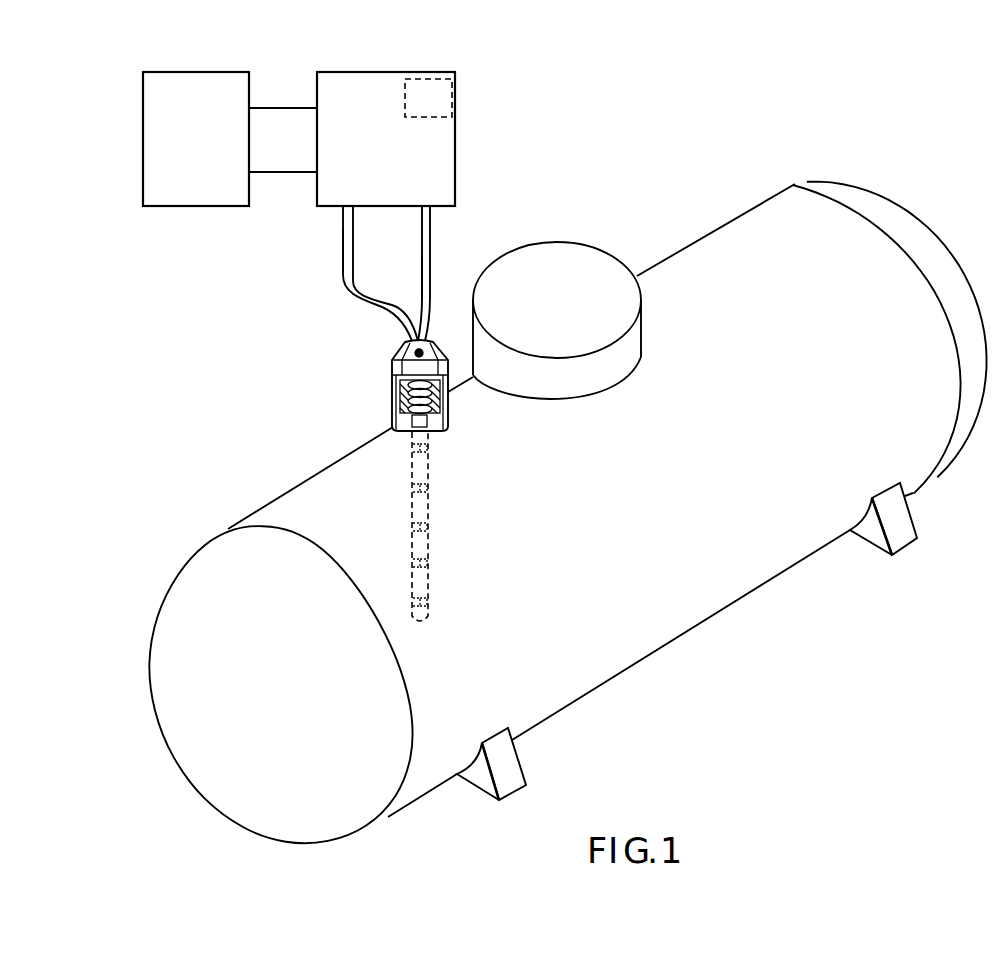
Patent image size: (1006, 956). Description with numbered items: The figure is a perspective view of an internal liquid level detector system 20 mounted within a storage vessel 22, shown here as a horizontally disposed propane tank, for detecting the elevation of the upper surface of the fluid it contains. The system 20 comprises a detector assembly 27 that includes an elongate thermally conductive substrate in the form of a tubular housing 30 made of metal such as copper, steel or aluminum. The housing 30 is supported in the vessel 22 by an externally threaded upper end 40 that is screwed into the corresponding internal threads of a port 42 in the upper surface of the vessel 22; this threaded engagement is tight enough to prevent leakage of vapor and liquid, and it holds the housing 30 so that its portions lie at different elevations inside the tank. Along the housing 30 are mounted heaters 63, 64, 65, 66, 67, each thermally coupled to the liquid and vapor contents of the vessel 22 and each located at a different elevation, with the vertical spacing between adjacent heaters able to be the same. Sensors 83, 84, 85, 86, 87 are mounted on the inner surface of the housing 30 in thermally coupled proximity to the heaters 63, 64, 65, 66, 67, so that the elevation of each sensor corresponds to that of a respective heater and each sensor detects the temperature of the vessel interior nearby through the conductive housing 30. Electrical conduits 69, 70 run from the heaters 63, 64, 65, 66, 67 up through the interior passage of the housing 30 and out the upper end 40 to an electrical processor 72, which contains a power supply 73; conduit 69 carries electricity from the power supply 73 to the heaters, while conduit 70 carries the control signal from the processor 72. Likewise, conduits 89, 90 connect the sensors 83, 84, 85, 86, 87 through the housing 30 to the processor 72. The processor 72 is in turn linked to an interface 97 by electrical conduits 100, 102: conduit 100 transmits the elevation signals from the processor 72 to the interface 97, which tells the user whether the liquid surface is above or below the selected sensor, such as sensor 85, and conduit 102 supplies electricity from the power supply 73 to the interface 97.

The internal liquid level detector system 20 is at (322, 341).
The storage vessel 22 is at (697, 232).
The detector assembly 27 is at (450, 332).
The tubular housing 30 is at (400, 506).
The externally threaded upper end 40 is at (403, 397).
The port 42 is at (433, 395).
The heater 63 is at (411, 447).
The heater 64 is at (412, 485).
The heater 65 is at (410, 529).
The heater 66 is at (410, 563).
The heater 67 is at (410, 602).
The electrical conduit 69 is at (343, 232).
The electrical conduit 70 is at (354, 233).
The electrical processor 72 is at (386, 139).
The power supply 73 is at (428, 98).
The sensor 83 is at (430, 446).
The sensor 84 is at (430, 487).
The sensor 85 is at (430, 526).
The sensor 86 is at (430, 562).
The sensor 87 is at (430, 601).
The electrical conduit 89 is at (421, 260).
The electrical conduit 90 is at (431, 252).
The interface 97 is at (196, 139).
The electrical conduit 100 is at (287, 107).
The electrical conduit 102 is at (283, 173).